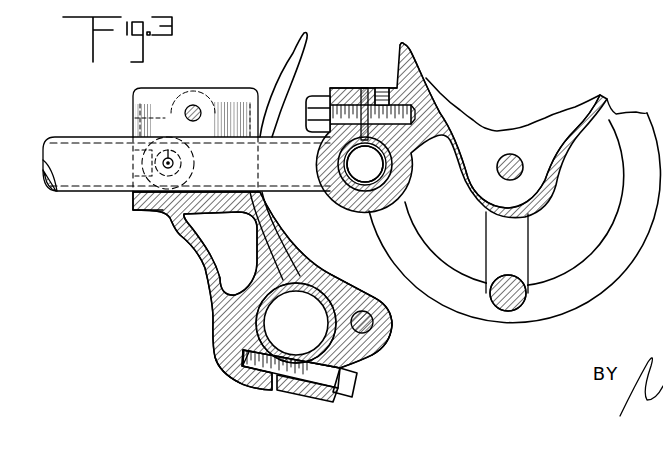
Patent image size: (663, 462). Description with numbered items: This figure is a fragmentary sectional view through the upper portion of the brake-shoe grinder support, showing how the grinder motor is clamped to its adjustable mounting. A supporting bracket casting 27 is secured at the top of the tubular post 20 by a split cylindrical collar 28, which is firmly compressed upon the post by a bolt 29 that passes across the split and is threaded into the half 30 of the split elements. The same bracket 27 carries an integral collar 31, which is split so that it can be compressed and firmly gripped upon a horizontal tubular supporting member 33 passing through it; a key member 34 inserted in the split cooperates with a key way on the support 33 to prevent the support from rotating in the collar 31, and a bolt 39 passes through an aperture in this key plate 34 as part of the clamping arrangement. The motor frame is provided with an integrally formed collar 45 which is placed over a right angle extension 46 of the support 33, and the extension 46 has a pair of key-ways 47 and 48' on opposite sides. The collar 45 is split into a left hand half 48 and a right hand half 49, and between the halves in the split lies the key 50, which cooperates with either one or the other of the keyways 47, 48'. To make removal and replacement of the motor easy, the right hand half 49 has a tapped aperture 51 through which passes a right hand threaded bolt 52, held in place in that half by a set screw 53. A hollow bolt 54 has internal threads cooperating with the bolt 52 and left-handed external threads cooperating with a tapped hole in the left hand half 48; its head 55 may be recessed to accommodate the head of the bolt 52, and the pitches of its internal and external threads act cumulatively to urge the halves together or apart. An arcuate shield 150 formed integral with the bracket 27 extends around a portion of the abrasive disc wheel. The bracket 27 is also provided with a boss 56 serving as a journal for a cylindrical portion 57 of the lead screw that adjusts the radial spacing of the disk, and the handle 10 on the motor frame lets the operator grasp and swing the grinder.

The handle 10 is at (513, 318).
The tubular post 20 is at (312, 276).
The supporting bracket casting 27 is at (202, 262).
The split cylindrical collar 28 is at (343, 285).
The bolt 29 is at (355, 382).
The half of the split collar 30 is at (247, 372).
The integral collar 31 is at (135, 213).
The horizontal tubular supporting member 33 is at (80, 150).
The key member 34 is at (155, 97).
The bolt 39 is at (198, 107).
The collar 45 is at (338, 195).
The right angle extension 46 is at (388, 187).
The key-way 47 is at (360, 212).
The left hand half 48 is at (371, 91).
The key-way 48' is at (397, 168).
The right hand half 49 is at (372, 87).
The key 50 is at (364, 88).
The tapped aperture 51 is at (433, 100).
The right hand threaded bolt 52 is at (412, 62).
The set screw 53 is at (386, 87).
The hollow bolt 54 is at (328, 97).
The head of the hollow bolt 55 is at (308, 111).
The boss 56 is at (388, 338).
The cylindrical portion of the lead screw 57 is at (370, 312).
The arcuate shield 150 is at (288, 50).